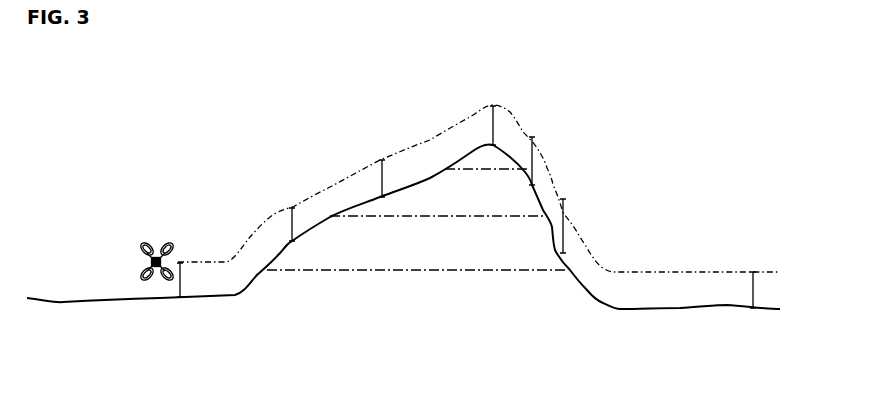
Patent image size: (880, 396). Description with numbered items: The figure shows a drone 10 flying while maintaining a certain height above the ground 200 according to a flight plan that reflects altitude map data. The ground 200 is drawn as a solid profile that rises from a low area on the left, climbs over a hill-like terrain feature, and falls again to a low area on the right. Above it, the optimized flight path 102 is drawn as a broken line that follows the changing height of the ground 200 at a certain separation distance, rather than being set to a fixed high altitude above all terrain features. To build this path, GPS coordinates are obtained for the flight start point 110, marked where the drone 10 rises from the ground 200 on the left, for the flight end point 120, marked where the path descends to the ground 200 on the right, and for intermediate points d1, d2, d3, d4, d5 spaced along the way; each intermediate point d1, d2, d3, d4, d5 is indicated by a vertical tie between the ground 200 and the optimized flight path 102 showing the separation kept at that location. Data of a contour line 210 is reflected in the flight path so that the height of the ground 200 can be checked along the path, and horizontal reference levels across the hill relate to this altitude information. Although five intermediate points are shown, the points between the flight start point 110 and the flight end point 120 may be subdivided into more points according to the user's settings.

The drone 10 is at (163, 243).
The optimized flight path 102 is at (580, 226).
The flight start point 110 is at (176, 301).
The flight end point 120 is at (755, 305).
The ground 200 is at (82, 304).
The contour line 210 is at (505, 164).
The intermediate point d1 is at (289, 208).
The intermediate point d2 is at (377, 163).
The intermediate point d3 is at (492, 110).
The intermediate point d4 is at (541, 151).
The intermediate point d5 is at (567, 214).